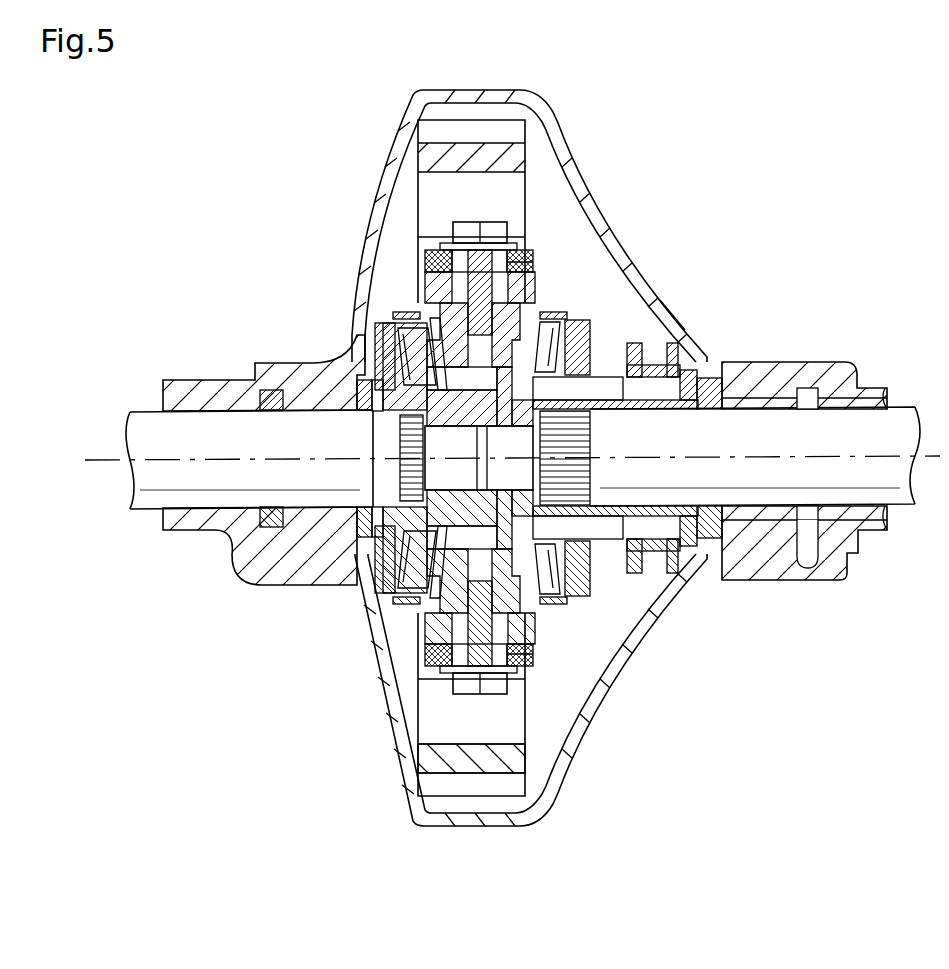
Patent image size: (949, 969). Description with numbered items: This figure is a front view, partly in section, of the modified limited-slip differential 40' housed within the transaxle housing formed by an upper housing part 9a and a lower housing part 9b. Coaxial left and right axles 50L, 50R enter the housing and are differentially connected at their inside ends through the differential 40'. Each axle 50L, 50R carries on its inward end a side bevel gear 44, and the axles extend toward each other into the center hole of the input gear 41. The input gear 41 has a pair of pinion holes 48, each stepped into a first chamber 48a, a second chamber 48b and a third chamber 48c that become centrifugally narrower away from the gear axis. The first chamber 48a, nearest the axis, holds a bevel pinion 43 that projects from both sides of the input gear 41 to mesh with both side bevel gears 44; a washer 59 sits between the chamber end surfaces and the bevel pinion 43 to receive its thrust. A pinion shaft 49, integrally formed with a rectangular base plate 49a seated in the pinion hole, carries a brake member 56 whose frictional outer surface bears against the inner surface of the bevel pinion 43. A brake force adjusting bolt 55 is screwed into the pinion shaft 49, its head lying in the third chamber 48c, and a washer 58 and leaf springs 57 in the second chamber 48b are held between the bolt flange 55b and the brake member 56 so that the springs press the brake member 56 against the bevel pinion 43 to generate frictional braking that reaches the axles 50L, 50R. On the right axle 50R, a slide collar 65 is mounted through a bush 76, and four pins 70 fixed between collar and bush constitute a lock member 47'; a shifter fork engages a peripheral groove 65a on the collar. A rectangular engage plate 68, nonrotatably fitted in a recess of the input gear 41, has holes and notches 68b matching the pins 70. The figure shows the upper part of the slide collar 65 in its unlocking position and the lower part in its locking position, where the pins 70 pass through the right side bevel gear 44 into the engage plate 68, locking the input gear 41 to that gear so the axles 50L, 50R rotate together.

The upper housing part 9a is at (870, 362).
The lower housing part 9b is at (808, 570).
The differential 40' is at (553, 458).
The input gear 41 is at (520, 757).
The bevel pinion 43 is at (375, 325).
The side bevel gear 44 is at (568, 320).
The lock member 47' is at (681, 299).
The pinion hole 48 is at (362, 458).
The first chamber 48a is at (418, 299).
The second chamber 48b is at (405, 265).
The third chamber 48c is at (406, 212).
The pinion shaft 49 is at (445, 300).
The base plate 49a is at (318, 363).
The left axle 50L is at (230, 455).
The right axle 50R is at (660, 455).
The brake force adjusting bolt 55 is at (488, 215).
The flange 55b is at (517, 246).
The brake member 56 is at (541, 291).
The leaf springs 57 is at (533, 262).
The washer 58 is at (535, 266).
The washer 59 is at (393, 315).
The slide collar 65 is at (640, 345).
The peripheral groove 65a is at (640, 555).
The engage plate 68 is at (520, 430).
The notches 68b is at (605, 378).
The pins 70 is at (745, 362).
The bush 76 is at (688, 370).